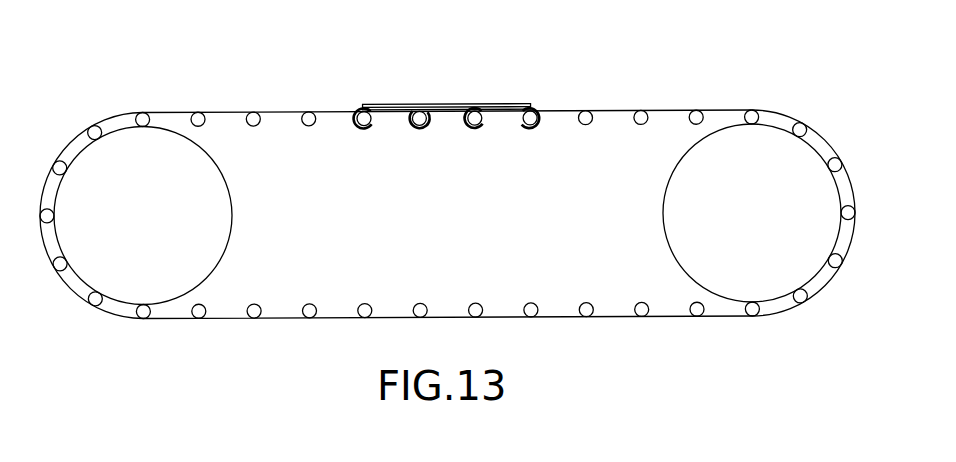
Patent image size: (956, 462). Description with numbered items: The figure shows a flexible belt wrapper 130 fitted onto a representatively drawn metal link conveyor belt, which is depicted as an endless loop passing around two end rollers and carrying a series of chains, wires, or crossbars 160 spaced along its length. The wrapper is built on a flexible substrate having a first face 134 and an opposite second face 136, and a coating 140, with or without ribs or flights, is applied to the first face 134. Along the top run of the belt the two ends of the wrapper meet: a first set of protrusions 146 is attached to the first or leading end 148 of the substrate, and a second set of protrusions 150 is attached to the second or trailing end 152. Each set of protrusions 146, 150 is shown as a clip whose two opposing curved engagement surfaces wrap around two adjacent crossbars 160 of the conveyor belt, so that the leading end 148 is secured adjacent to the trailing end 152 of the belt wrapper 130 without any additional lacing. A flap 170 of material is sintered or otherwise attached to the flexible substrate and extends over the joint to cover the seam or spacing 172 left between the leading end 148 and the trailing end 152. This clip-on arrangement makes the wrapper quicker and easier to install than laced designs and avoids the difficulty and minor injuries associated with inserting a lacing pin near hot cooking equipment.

The flexible belt wrapper 130 is at (306, 334).
The first face 134 is at (701, 96).
The second face 136 is at (657, 124).
The coating 140 is at (330, 111).
The first set of protrusions 146 is at (543, 115).
The first end 148 is at (455, 113).
The second set of protrusions 150 is at (350, 128).
The second end 152 is at (437, 116).
The crossbars 160 is at (482, 123).
The flap 170 is at (468, 103).
The spacing 172 is at (447, 130).